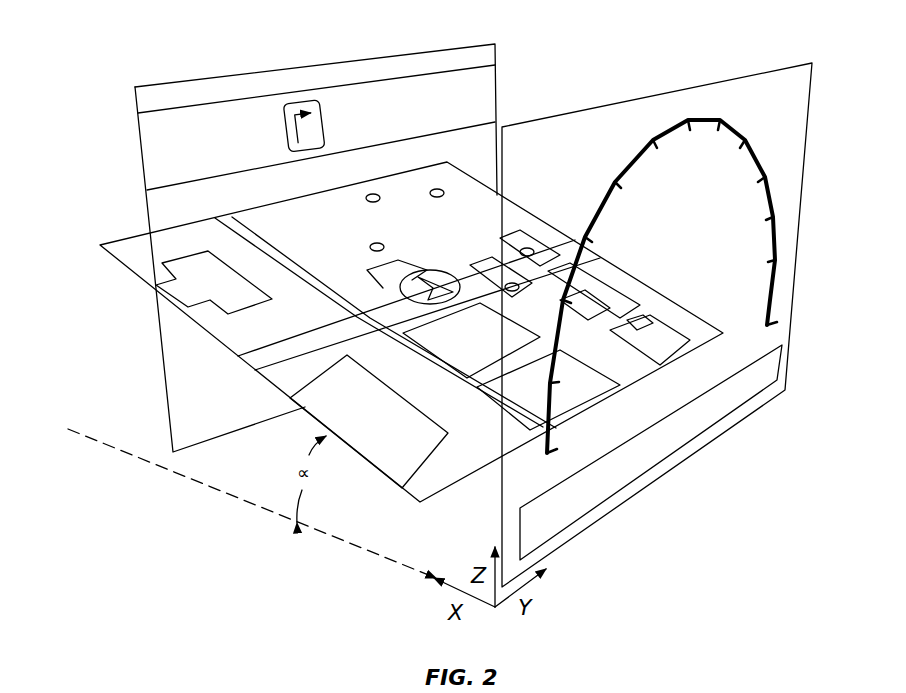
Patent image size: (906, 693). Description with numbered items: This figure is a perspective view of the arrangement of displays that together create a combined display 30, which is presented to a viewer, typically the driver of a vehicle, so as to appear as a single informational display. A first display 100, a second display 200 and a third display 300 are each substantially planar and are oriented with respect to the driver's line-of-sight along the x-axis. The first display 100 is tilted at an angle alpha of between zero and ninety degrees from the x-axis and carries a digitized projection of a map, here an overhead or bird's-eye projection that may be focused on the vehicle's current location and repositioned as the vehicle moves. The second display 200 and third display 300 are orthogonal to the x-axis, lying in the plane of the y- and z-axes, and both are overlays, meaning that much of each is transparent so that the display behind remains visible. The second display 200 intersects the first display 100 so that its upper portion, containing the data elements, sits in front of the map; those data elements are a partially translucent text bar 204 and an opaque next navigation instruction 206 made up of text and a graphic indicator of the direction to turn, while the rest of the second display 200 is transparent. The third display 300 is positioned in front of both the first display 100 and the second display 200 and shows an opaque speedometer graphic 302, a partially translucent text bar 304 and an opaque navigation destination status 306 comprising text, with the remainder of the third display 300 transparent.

The combined display 30 is at (114, 64).
The first display 100 is at (102, 252).
The second display 200 is at (517, 33).
The text bar 204 is at (145, 135).
The next navigation instruction 206 is at (226, 115).
The third display 300 is at (768, 73).
The speedometer graphic 302 is at (772, 200).
The text bar 304 is at (786, 365).
The navigation destination status 306 is at (660, 463).